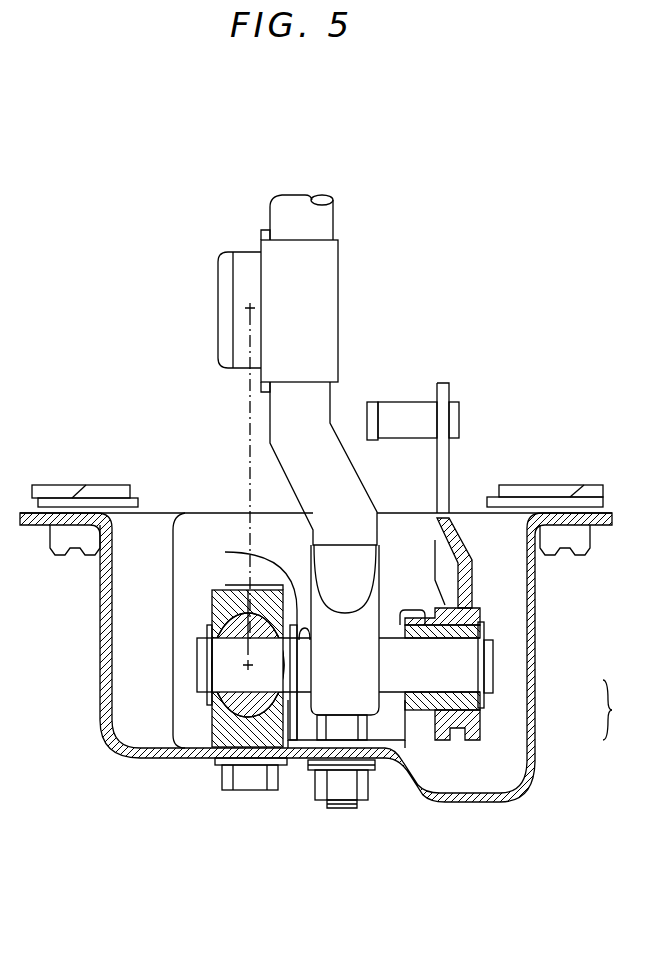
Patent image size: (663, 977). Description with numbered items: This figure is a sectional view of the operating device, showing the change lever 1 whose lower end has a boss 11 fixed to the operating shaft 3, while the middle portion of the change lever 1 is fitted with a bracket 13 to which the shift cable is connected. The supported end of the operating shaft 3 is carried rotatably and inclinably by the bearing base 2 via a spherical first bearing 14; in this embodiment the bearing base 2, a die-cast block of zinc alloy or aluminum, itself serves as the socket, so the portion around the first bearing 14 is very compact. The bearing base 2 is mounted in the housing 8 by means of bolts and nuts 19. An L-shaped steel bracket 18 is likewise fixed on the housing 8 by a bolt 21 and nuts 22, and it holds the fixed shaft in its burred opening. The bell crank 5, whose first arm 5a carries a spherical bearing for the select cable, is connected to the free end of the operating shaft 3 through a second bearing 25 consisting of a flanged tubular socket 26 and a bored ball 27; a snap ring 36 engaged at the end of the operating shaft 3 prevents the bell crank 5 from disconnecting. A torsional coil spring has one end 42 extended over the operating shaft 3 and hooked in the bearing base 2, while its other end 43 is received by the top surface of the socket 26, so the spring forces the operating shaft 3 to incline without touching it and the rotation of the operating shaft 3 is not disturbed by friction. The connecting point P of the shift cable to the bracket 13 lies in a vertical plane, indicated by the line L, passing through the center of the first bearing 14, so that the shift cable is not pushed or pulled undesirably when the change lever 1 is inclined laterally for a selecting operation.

The change lever 1 is at (325, 232).
The bearing base 2 is at (215, 760).
The operating shaft 3 is at (200, 668).
The bell crank 5 is at (455, 473).
The first arm 5a is at (450, 384).
The housing 8 is at (165, 760).
The boss 11 is at (372, 705).
The bracket 13 is at (240, 252).
The first bearing 14 is at (203, 618).
The bracket 18 is at (388, 745).
The nuts 19 is at (245, 786).
The bolt 21 is at (345, 805).
The nuts 22 is at (330, 728).
The second bearing 25 is at (623, 710).
The flanged tubular socket 26 is at (470, 730).
The bored ball 27 is at (460, 680).
The snap ring 36 is at (462, 623).
The one end of the spring 42 is at (240, 558).
The other end of the spring 43 is at (410, 610).
The connecting point P is at (246, 308).
The line L is at (248, 418).